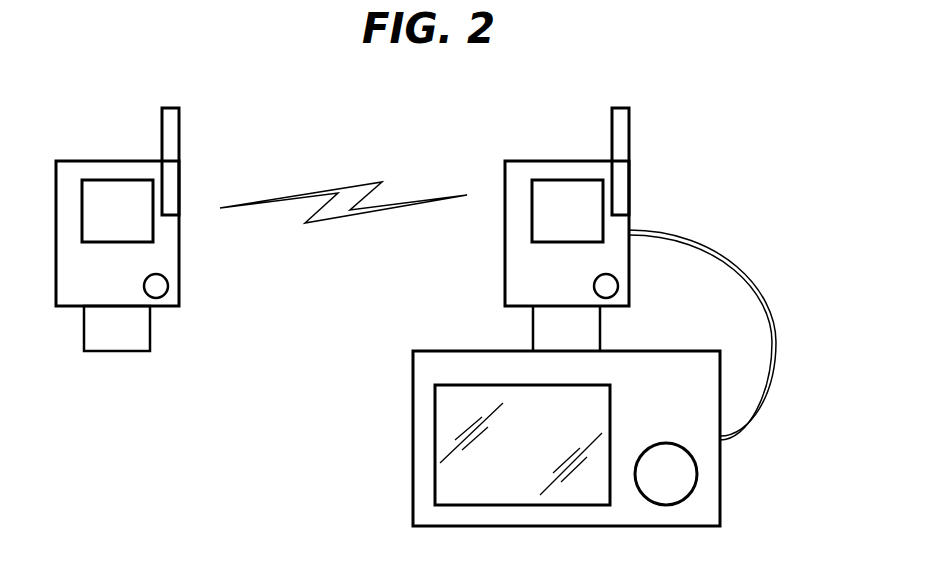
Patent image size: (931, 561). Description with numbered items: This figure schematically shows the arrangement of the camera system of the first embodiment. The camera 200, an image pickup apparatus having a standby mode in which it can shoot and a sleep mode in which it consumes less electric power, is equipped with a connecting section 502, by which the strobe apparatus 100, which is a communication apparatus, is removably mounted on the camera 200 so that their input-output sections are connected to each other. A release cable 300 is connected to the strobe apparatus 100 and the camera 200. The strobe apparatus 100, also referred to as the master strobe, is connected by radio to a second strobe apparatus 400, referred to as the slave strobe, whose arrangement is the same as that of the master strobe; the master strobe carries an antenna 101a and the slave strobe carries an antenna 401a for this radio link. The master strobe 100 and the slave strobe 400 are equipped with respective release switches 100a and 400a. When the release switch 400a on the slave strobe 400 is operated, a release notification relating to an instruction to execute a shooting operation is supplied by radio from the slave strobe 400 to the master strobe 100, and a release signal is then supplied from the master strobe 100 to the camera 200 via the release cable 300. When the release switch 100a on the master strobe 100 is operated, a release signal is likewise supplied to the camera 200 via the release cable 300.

The strobe apparatus 100 is at (567, 161).
The antenna 101a is at (629, 142).
The release switch 100a is at (618, 286).
The camera 200 is at (413, 492).
The release cable 300 is at (748, 272).
The strobe apparatus 400 is at (118, 161).
The antenna 401a is at (179, 142).
The release switch 400a is at (168, 286).
The connecting section 502 is at (533, 322).